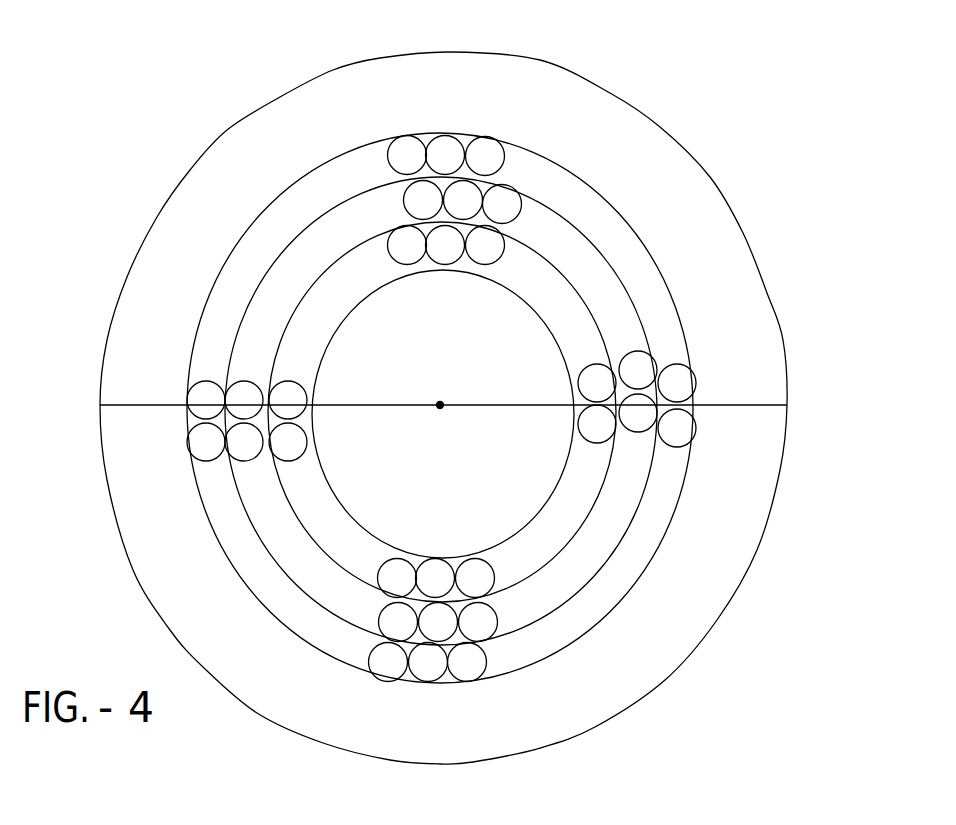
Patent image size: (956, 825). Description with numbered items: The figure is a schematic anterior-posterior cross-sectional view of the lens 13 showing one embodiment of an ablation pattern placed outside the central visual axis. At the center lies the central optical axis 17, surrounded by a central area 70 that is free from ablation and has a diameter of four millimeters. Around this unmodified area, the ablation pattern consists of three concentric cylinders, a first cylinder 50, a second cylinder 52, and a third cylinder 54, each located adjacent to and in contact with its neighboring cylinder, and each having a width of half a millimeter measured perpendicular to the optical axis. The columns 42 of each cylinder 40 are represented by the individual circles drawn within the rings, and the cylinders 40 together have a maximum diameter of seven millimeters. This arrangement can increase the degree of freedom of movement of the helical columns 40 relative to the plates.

The lens 13 is at (165, 302).
The central optical axis 17 is at (442, 403).
The cylinder 40 is at (382, 227).
The columns 42 is at (456, 139).
The first cylinder 50 is at (337, 258).
The second cylinder 52 is at (277, 260).
The third cylinder 54 is at (220, 268).
The central area 70 is at (443, 414).